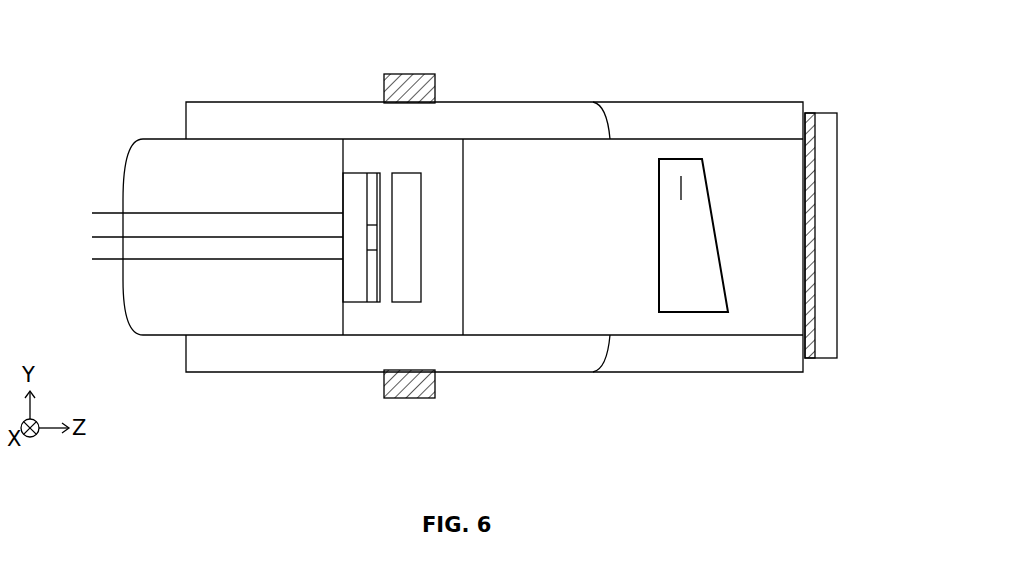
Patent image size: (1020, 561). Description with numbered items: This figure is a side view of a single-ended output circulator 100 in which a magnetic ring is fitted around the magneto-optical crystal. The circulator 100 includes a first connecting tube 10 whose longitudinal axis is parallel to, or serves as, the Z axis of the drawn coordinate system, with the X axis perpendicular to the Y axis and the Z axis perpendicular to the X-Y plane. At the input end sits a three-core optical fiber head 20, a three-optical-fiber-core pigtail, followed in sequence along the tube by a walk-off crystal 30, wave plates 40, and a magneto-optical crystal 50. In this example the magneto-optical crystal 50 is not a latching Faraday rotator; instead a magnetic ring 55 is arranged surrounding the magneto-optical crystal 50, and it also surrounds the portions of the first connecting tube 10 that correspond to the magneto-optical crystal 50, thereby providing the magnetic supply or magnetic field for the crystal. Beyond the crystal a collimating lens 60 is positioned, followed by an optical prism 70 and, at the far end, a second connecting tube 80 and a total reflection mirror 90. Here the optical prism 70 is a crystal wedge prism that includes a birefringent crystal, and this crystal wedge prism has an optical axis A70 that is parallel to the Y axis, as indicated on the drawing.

The single-ended output circulator 100 is at (130, 25).
The first connecting tube 10 is at (333, 112).
The three-core optical fiber head 20 is at (237, 312).
The walk-off crystal 30 is at (350, 290).
The wave plates 40 is at (373, 273).
The magneto-optical crystal 50 is at (416, 273).
The magnetic ring 55 is at (403, 74).
The collimating lens 60 is at (503, 307).
The optical prism 70 is at (725, 318).
The optical axis A70 is at (688, 182).
The second connecting tube 80 is at (730, 120).
The total reflection mirror 90 is at (843, 160).